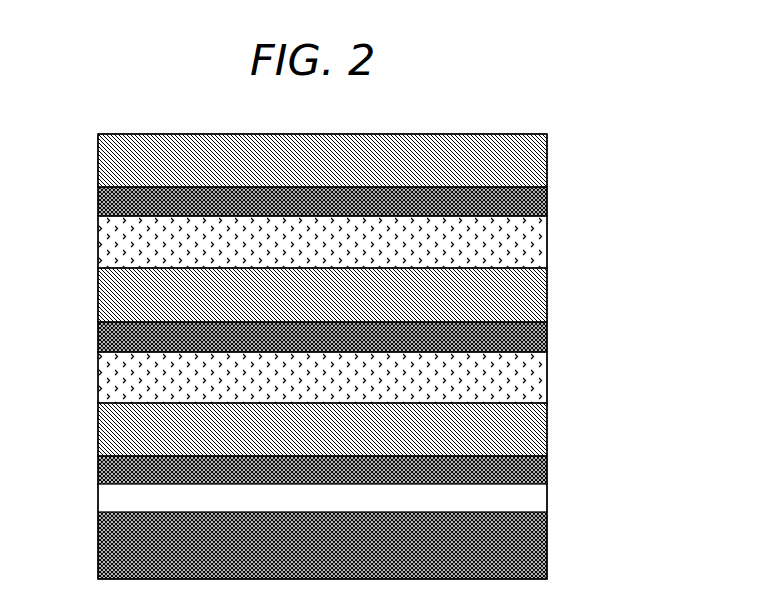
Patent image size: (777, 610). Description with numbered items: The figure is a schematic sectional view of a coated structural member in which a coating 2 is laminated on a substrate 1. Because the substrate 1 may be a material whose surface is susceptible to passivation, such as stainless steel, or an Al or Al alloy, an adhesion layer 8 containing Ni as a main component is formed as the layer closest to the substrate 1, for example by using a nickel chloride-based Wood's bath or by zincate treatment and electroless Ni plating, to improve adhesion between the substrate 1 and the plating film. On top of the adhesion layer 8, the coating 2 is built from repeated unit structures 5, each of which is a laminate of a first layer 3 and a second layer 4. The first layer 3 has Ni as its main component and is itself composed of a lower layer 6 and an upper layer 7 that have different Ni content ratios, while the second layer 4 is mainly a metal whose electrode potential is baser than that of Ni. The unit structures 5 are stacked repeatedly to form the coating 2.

The substrate 1 is at (108, 540).
The coating 2 is at (381, 308).
The first layer 3 is at (383, 174).
The second layer 4 is at (535, 243).
The unit structure 5 is at (410, 200).
The lower layer 6 is at (357, 201).
The upper layer 7 is at (533, 163).
The adhesion layer 8 is at (535, 500).